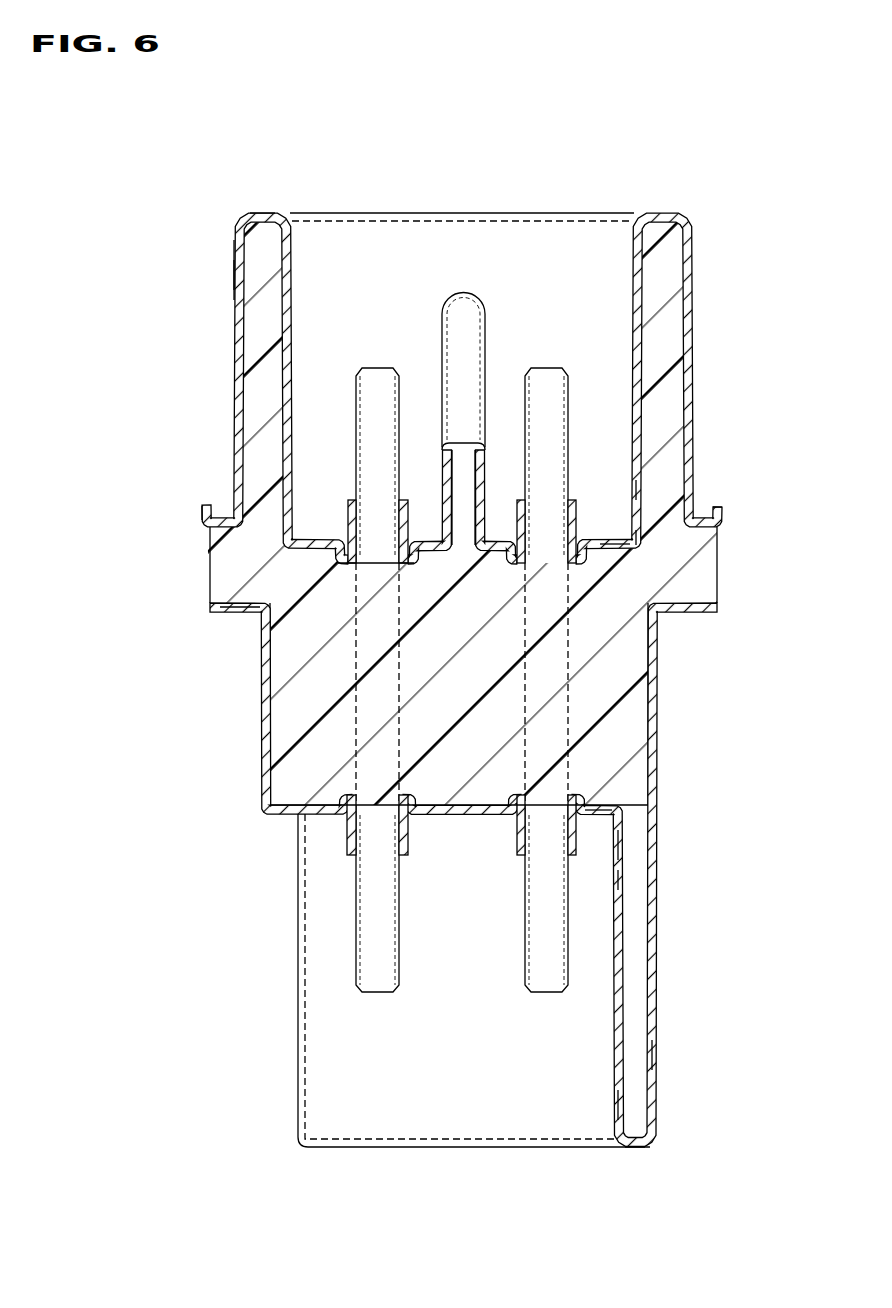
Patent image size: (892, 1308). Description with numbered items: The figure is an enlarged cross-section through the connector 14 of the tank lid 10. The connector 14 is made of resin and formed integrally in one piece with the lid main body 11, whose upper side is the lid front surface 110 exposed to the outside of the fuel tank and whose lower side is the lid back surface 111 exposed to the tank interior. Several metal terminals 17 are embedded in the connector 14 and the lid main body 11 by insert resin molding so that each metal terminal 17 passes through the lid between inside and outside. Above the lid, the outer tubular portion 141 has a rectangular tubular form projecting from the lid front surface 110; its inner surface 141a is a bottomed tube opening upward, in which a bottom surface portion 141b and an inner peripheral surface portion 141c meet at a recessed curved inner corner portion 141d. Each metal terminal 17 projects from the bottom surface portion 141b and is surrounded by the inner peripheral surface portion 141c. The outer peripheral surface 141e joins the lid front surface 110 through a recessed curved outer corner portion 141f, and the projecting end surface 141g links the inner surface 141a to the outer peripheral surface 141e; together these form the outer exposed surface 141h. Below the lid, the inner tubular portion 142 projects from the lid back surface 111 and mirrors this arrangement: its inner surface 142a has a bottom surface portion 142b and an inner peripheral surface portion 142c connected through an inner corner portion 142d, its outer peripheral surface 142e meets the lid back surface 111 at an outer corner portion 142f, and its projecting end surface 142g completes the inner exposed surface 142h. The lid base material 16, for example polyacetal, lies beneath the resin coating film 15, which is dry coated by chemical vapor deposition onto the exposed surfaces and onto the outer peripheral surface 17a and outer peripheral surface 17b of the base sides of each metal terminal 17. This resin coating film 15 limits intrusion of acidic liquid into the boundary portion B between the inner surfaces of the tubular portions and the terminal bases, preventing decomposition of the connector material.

The tank lid 10 is at (205, 616).
The lid main body 11 is at (215, 560).
The lid front surface 110 is at (714, 509).
The lid back surface 111 is at (695, 612).
The connector 14 is at (481, 679).
The outer tubular portion 141 is at (684, 218).
The inner surface of the outer tubular portion 141a is at (288, 262).
The bottom surface portion 141b is at (635, 548).
The inner peripheral surface portion 141c is at (640, 500).
The inner corner portion 141d is at (650, 545).
The outer peripheral surface of the outer tubular portion 141e is at (236, 268).
The outer corner portion 141f is at (207, 508).
The projecting end surface of the outer tubular portion 141g is at (250, 213).
The outer exposed surface 141h is at (131, 166).
The inner tubular portion 142 is at (300, 1146).
The inner surface of the inner tubular portion 142a is at (624, 1104).
The bottom surface portion 142b is at (602, 803).
The inner peripheral surface portion 142c is at (619, 880).
The inner corner portion 142d is at (622, 845).
The outer peripheral surface of the inner tubular portion 142e is at (650, 1058).
The outer corner portion 142f is at (242, 625).
The projecting end surface of the inner tubular portion 142g is at (641, 1150).
The inner exposed surface 142h is at (763, 1052).
The resin coating film 15 is at (702, 440).
The lid base material 16 is at (283, 745).
The metal terminal 17 is at (366, 432).
The outer peripheral surface of the base side of the metal terminal 17a is at (349, 522).
The outer peripheral surface of the base side of the metal terminal 17b is at (353, 832).
The boundary portion B is at (406, 778).